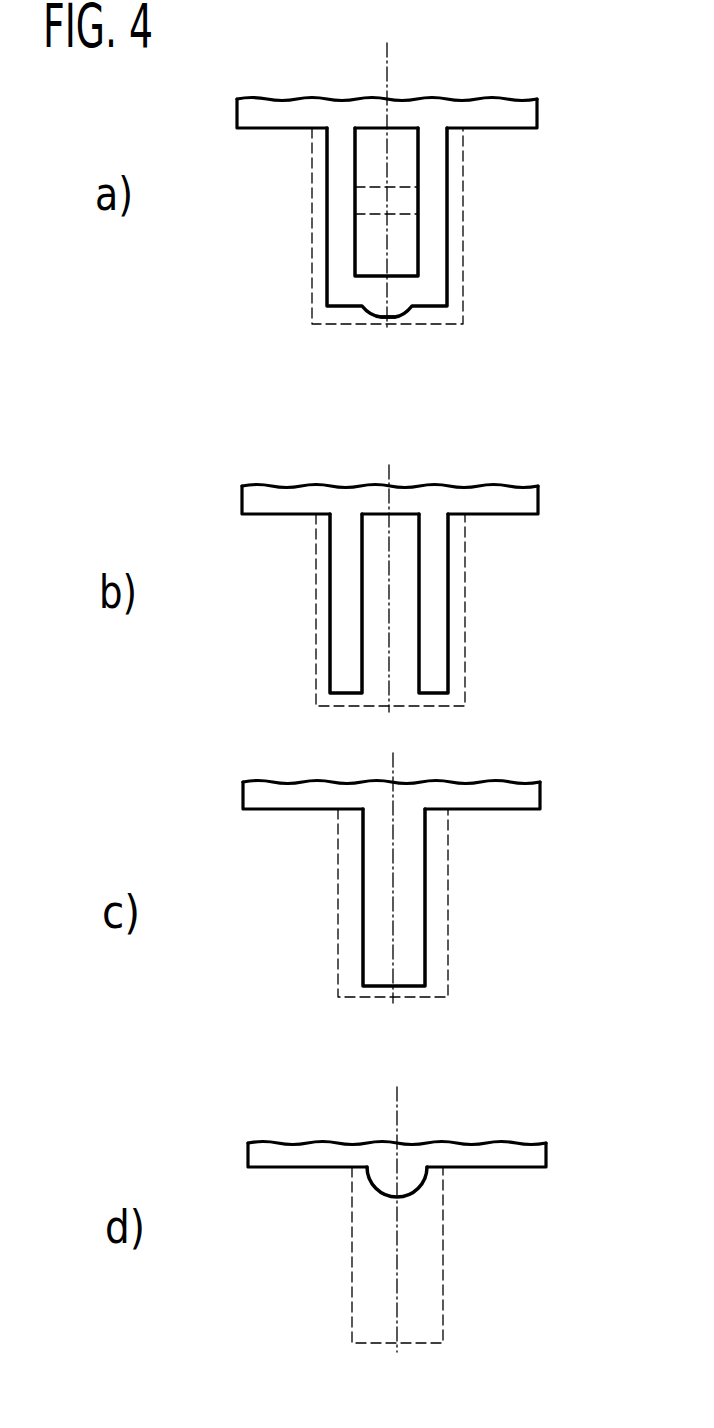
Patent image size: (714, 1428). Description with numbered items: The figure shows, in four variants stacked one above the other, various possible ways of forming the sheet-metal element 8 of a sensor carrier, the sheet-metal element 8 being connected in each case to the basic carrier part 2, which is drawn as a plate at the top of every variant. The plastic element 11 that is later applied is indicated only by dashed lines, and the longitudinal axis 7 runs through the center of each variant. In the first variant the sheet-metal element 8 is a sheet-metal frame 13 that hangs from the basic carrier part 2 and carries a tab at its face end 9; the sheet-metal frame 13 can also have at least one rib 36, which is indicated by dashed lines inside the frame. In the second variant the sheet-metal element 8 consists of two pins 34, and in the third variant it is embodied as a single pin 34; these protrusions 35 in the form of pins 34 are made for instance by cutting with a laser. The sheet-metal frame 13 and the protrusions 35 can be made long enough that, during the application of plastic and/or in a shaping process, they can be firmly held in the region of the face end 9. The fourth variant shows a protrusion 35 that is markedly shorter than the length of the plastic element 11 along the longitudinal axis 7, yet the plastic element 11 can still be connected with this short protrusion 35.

The basic carrier part 2 is at (537, 108).
The longitudinal axis 7 is at (387, 63).
The sheet-metal element 8 is at (470, 681).
The face end 9 is at (395, 318).
The plastic element 11 is at (458, 285).
The sheet-metal frame 13 is at (447, 232).
The pin 34 is at (448, 603).
The protrusion 35 is at (471, 874).
The rib 36 is at (410, 200).